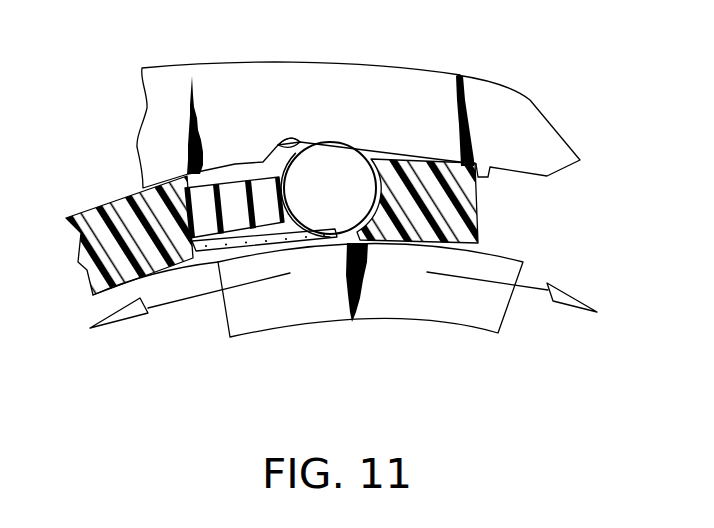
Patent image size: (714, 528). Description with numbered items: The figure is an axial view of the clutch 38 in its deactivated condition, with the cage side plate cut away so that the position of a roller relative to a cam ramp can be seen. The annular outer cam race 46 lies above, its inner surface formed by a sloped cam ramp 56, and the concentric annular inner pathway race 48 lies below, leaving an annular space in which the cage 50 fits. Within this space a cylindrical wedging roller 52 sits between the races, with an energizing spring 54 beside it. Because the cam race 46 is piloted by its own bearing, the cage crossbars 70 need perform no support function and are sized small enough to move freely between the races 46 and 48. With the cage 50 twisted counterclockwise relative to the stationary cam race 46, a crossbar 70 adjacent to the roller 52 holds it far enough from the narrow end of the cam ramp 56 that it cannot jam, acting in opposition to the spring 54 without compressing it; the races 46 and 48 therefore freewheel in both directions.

The clutch 38 is at (130, 96).
The cam race 46 is at (565, 114).
The pathway race 48 is at (538, 255).
The cage 50 is at (76, 285).
The wedging roller 52 is at (343, 213).
The energizing spring 54 is at (263, 215).
The cam ramp 56 is at (278, 143).
The cage crossbar 70 is at (140, 213).